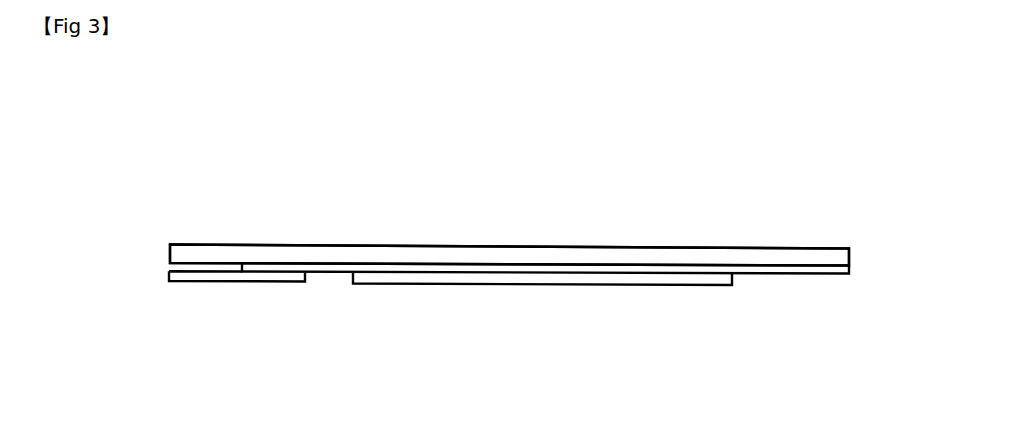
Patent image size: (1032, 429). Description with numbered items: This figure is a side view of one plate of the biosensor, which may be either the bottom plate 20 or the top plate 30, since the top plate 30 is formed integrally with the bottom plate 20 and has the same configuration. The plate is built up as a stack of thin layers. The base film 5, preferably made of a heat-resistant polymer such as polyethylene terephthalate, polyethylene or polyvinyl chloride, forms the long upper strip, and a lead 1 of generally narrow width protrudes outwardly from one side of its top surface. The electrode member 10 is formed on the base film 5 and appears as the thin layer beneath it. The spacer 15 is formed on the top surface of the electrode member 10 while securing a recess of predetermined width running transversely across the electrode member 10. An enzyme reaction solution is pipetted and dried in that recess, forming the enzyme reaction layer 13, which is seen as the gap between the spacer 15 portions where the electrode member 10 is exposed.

The lead 1 is at (850, 258).
The base film 5 is at (277, 245).
The electrode member 10 is at (393, 268).
The enzyme reaction layer 13 is at (333, 280).
The spacer 15 is at (520, 283).
The bottom plate 20 is at (447, 265).
The top plate 30 is at (447, 265).